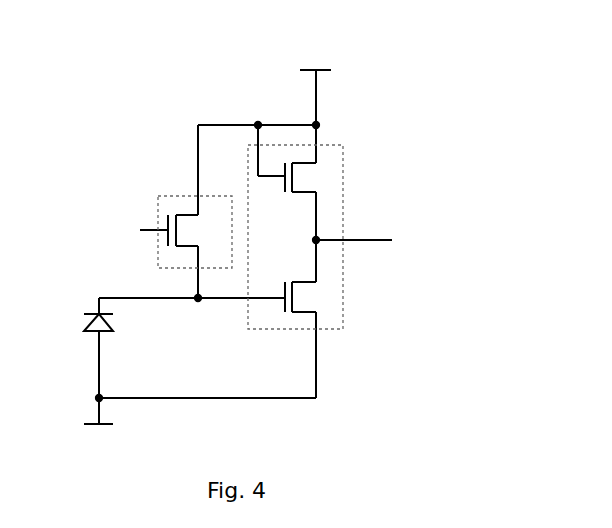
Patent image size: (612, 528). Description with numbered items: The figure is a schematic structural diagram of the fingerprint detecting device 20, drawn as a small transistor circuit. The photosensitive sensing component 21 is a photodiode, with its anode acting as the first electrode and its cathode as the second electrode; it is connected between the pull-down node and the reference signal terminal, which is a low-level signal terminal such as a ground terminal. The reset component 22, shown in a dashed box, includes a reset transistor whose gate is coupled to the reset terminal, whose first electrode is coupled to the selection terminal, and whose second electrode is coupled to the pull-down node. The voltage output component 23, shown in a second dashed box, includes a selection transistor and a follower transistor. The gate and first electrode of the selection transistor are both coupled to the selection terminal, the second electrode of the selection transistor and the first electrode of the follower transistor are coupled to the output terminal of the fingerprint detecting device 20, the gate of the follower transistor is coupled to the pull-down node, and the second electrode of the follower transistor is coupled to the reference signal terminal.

The fingerprint detecting device 20 is at (240, 232).
The photosensitive sensing component 21 is at (83, 321).
The reset component 22 is at (180, 196).
The voltage output component 23 is at (335, 145).